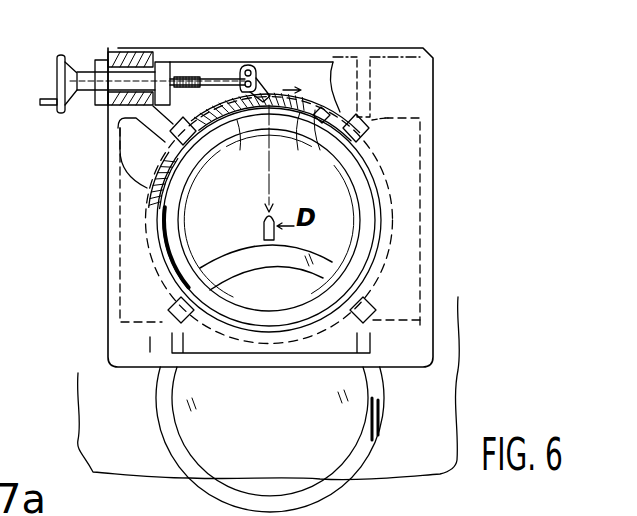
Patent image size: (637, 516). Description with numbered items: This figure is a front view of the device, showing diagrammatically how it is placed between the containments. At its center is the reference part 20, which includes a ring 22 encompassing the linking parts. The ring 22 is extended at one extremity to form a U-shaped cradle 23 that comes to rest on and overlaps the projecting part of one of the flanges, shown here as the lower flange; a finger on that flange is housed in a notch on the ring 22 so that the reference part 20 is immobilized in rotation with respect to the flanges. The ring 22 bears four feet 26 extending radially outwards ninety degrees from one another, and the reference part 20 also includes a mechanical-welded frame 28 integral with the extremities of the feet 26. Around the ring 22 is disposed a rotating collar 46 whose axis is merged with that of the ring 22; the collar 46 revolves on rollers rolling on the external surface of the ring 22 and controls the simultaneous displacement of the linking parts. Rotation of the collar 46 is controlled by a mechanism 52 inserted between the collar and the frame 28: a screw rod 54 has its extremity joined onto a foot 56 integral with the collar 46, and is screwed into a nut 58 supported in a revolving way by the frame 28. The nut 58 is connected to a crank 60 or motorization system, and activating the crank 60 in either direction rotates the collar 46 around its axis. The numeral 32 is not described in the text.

The reference part 20 is at (258, 432).
The ring 22 is at (373, 197).
The cradle 23 is at (150, 347).
The feet 26 is at (360, 52).
The frame 28 is at (433, 162).
The marker 32 is at (347, 405).
The rotating collar 46 is at (148, 187).
The mechanism 52 is at (131, 42).
The screw rod 54 is at (200, 80).
The foot 56 is at (258, 73).
The nut 58 is at (147, 62).
The crank 60 is at (65, 57).